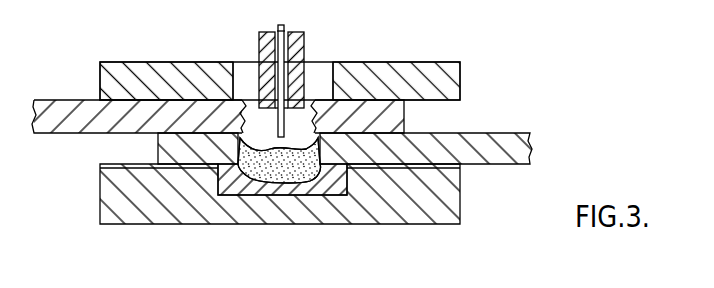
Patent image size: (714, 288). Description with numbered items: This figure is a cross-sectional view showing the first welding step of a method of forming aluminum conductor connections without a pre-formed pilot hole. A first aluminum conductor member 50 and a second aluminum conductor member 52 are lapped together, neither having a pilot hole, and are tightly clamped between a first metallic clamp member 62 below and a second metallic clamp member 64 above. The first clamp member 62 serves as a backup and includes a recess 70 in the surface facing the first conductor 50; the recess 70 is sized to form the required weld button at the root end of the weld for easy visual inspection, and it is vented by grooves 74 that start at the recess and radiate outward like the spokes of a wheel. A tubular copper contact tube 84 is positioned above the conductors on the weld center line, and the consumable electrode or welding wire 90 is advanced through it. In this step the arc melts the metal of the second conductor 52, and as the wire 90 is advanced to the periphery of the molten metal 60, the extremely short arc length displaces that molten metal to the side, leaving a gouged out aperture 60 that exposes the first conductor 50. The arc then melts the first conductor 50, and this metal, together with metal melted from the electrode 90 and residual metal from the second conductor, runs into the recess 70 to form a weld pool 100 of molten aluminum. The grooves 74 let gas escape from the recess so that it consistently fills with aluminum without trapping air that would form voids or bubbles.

The first aluminum conductor member 50 is at (491, 146).
The second aluminum conductor member 52 is at (78, 107).
The molten metal / gouged out aperture 60 is at (252, 109).
The first metallic clamp member 62 is at (458, 209).
The second metallic clamp member 64 is at (456, 77).
The recess 70 is at (257, 193).
The grooves 74 is at (118, 167).
The contact tube 84 is at (305, 48).
The consumable electrode or welding wire 90 is at (280, 25).
The weld pool 100 is at (296, 182).